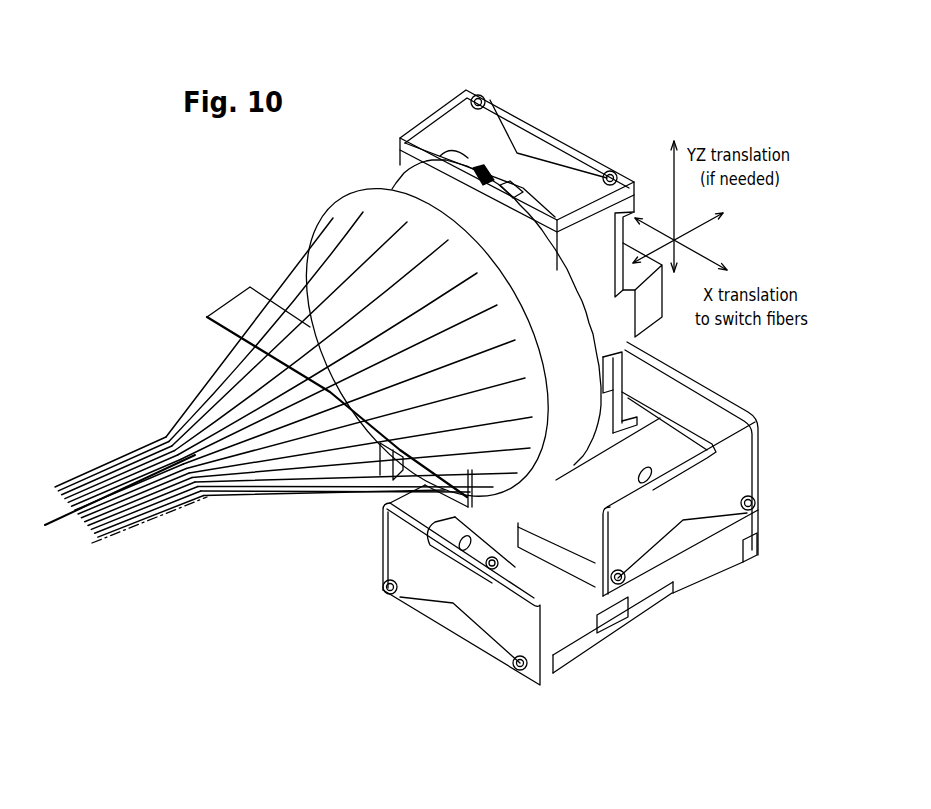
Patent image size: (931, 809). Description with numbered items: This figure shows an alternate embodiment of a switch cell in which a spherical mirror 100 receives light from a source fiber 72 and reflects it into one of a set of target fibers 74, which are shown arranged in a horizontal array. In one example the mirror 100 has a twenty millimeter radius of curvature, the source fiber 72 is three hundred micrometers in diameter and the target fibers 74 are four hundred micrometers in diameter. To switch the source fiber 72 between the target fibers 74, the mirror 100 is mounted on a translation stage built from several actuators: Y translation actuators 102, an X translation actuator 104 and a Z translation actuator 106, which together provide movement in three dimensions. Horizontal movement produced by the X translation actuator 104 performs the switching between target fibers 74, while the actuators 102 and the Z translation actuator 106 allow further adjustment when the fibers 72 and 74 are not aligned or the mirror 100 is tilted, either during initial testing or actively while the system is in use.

The source fiber 72 is at (53, 513).
The target fibers 74 is at (170, 513).
The spherical mirror 100 is at (352, 205).
The Y translation actuators 102 is at (683, 567).
The X translation actuator 104 is at (733, 473).
The Z translation actuator 106 is at (550, 180).